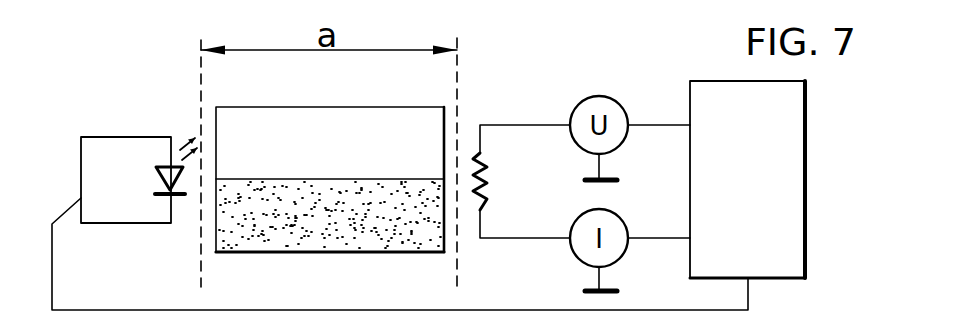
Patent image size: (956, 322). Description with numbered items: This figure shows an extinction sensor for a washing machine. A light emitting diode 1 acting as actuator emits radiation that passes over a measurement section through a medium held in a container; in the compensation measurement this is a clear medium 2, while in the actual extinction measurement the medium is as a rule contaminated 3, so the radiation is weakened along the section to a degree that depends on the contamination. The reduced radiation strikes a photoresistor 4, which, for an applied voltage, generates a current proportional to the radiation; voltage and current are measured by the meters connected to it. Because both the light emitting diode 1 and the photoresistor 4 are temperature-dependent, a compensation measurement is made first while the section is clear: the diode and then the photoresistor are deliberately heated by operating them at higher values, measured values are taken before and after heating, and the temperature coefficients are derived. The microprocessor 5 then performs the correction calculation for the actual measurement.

The light emitting diode 1 is at (155, 162).
The clear medium 2 is at (305, 130).
The contaminated medium 3 is at (318, 252).
The photoresistor 4 is at (490, 191).
The microprocessor 5 is at (808, 162).